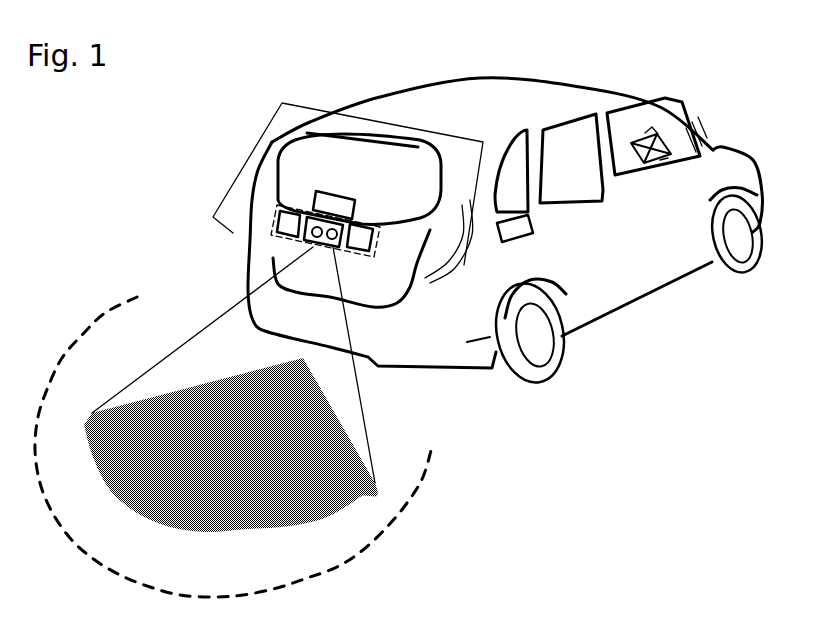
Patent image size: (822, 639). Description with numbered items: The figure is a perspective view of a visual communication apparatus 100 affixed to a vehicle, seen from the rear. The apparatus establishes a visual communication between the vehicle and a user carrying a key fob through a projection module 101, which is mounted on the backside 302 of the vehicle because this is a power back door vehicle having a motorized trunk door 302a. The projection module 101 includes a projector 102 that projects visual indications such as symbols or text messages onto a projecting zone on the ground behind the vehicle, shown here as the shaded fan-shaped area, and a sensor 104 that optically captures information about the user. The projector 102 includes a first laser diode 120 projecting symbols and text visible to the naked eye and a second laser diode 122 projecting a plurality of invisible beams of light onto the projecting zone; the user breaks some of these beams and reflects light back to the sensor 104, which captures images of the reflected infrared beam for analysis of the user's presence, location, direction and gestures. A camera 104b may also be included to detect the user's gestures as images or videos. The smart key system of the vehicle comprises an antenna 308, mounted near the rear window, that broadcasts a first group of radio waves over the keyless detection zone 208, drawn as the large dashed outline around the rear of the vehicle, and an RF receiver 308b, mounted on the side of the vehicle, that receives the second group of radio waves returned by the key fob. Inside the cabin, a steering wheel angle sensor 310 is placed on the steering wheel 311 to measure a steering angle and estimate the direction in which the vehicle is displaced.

The visual communication apparatus 100 is at (247, 158).
The projection module 101 is at (357, 217).
The projector 102 is at (313, 248).
The sensor 104 is at (280, 218).
The camera 104b is at (373, 253).
The first laser diode 120 is at (343, 250).
The second laser diode 122 is at (323, 250).
The keyless detection zone 208 is at (430, 443).
The backside 302 is at (300, 122).
The motorized trunk door 302a is at (403, 230).
The antenna 308 is at (317, 190).
The RF receiver 308b is at (533, 225).
The steering wheel angle sensor 310 is at (665, 153).
The steering wheel 311 is at (667, 160).